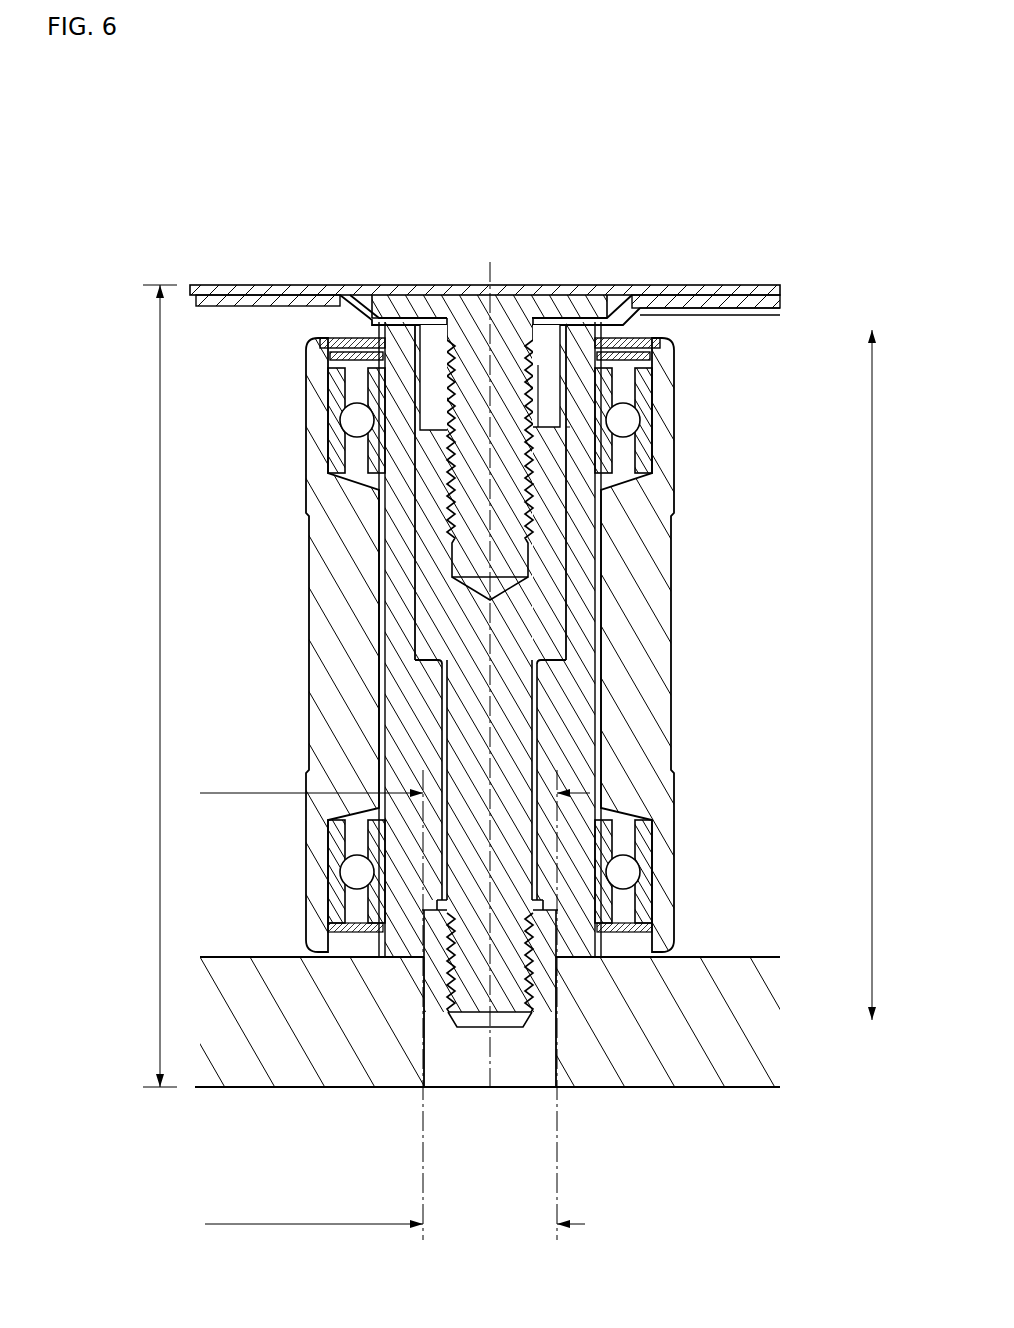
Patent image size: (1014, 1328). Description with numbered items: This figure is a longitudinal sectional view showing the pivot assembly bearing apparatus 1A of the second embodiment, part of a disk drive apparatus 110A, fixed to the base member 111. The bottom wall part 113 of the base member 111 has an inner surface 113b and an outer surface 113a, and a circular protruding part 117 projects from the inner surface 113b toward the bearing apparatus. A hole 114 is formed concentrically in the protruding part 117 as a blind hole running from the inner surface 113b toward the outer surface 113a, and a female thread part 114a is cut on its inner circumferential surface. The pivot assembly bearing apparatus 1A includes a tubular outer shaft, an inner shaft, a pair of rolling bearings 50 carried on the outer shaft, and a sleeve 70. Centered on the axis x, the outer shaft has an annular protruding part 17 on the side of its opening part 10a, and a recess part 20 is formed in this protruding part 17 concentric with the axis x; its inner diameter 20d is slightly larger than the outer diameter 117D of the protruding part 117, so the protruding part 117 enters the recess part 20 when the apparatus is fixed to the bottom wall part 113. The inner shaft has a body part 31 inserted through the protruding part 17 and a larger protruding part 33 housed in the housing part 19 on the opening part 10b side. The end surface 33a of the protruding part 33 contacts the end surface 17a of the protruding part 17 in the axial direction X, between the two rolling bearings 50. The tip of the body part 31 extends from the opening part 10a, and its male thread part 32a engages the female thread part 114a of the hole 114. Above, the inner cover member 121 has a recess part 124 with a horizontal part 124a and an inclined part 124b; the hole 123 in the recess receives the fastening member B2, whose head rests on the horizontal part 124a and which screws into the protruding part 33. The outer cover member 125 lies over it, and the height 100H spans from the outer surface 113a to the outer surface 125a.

The motor unit 110A is at (95, 207).
The outer surface 125a is at (212, 284).
The outer cover member 125 is at (657, 297).
The inner cover member 121 is at (760, 308).
The recess part 124 is at (368, 312).
The horizontal part 124a is at (386, 322).
The inclined part 124b is at (344, 317).
The hole 123 is at (450, 320).
The fastening member B2 is at (518, 325).
The opening part 10b is at (565, 330).
The pivot assembly bearing apparatus 1A is at (684, 342).
The rolling bearings 50 is at (650, 412).
The housing part 19 is at (575, 473).
The sleeve 70 is at (638, 525).
The protruding part 33 is at (432, 554).
The end surface 33a is at (548, 667).
The end surface 17a is at (414, 640).
The body part 31 is at (465, 705).
The protruding part 17 is at (553, 736).
The recess part 20 is at (541, 913).
The inner diameter 20d is at (395, 1003).
The male thread part 32a is at (556, 952).
The protruding part 117 is at (430, 914).
The outer diameter 117D is at (395, 1212).
The opening part 10a is at (402, 958).
The hole 114 is at (523, 1012).
The female thread part 114a is at (447, 995).
The bottom wall part 113 is at (490, 1074).
The base member 111 is at (653, 1038).
The outer surface 113a is at (750, 1088).
The inner surface 113b is at (262, 960).
The height 100H is at (135, 686).
The axial direction X is at (884, 675).
The axis x is at (488, 662).